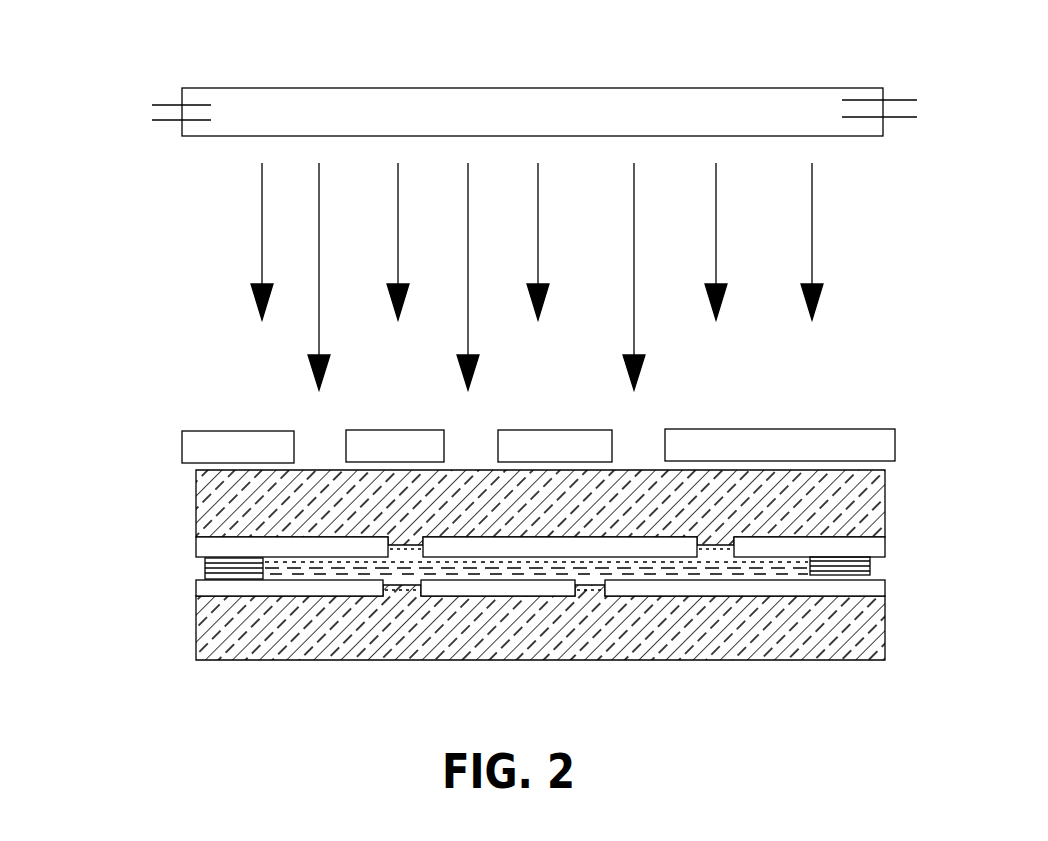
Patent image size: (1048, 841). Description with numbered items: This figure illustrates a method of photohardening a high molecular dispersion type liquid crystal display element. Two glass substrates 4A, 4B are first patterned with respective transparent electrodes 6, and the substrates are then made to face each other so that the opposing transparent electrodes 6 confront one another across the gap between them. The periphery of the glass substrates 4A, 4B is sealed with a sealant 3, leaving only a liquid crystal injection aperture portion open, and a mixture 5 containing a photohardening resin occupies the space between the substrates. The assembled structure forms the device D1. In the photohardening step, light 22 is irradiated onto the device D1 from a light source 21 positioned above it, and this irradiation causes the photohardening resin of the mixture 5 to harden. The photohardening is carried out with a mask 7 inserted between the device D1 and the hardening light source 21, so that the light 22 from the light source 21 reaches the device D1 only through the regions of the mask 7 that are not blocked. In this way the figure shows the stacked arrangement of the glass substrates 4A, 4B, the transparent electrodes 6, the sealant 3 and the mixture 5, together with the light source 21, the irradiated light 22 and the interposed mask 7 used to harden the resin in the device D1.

The light source 21 is at (597, 88).
The light 22 is at (812, 243).
The mask 7 is at (870, 427).
The device D1 is at (132, 455).
The glass substrate 4A is at (793, 513).
The glass substrate 4B is at (813, 630).
The transparent electrodes 6 is at (196, 579).
The sealant 3 is at (870, 567).
The mixture 5 is at (593, 567).